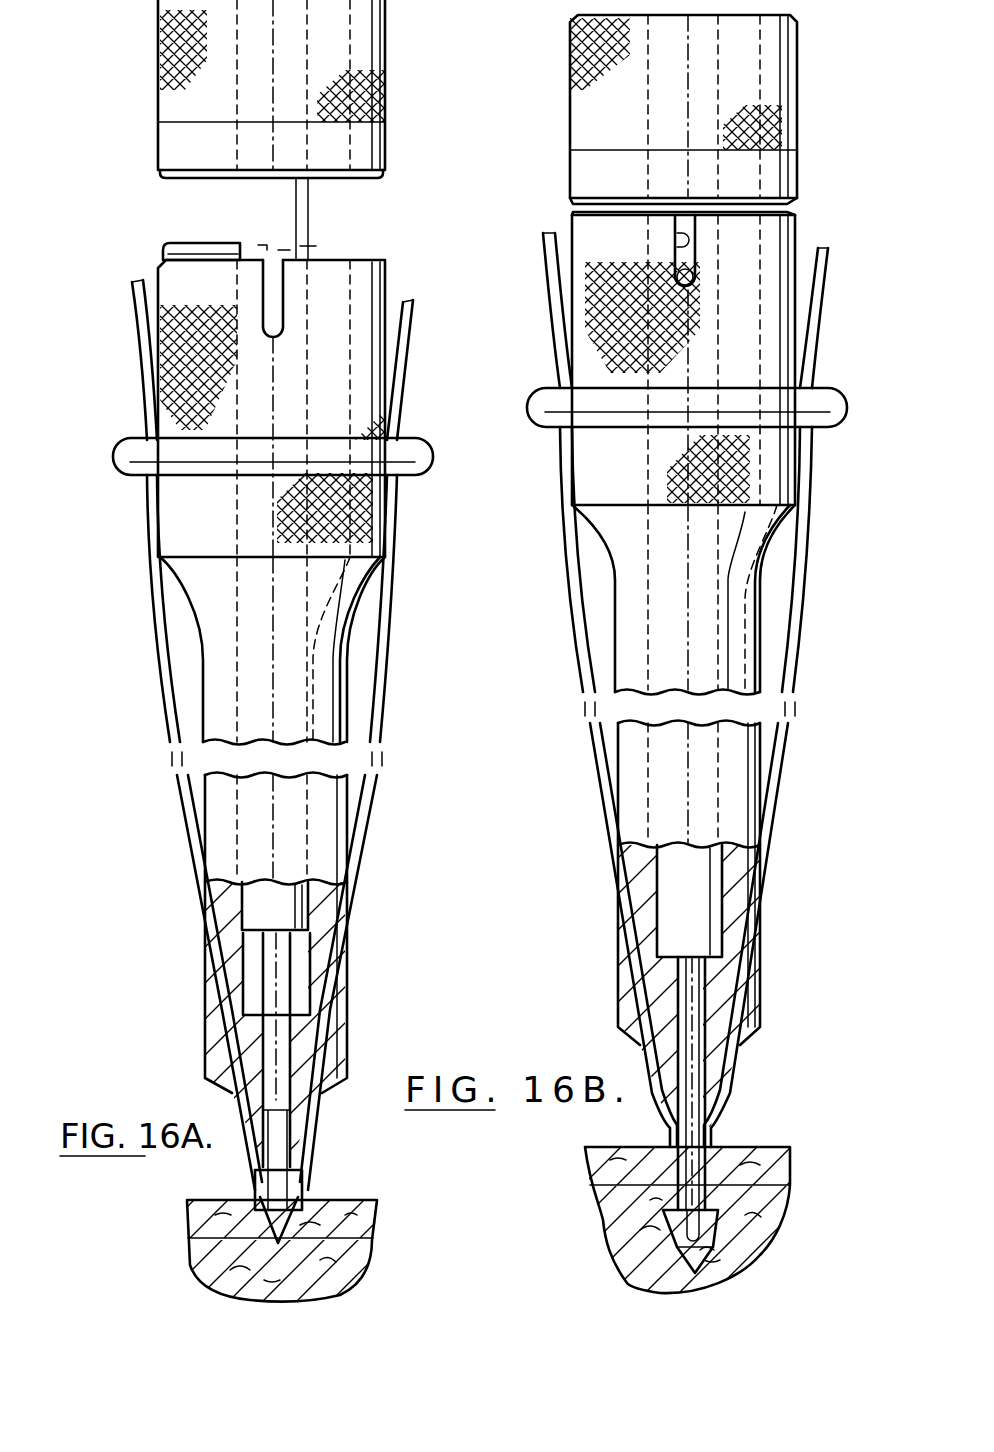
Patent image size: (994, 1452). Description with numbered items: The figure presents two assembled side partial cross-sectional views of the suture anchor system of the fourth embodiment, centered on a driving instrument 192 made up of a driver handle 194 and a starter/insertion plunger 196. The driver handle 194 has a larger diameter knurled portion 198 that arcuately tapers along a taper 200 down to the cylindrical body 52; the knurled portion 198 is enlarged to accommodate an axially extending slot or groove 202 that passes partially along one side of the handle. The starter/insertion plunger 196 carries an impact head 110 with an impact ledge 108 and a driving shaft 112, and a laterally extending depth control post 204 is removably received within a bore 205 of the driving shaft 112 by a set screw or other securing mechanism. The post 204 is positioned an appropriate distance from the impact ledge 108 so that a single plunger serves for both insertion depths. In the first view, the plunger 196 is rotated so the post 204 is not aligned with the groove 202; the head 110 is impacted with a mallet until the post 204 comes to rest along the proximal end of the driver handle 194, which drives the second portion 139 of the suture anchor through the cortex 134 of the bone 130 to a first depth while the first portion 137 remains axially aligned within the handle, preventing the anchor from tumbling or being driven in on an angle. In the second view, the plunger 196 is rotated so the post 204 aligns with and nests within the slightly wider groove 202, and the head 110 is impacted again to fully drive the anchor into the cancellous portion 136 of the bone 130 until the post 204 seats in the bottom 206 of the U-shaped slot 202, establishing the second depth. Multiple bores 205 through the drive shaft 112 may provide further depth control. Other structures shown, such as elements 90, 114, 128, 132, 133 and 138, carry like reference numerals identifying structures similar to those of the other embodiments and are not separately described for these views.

In FIG. 16A, the cylindrical body 52 is at (347, 802).
In FIG. 16B, the cylindrical body 52 is at (762, 758).
In FIG. 16A, the knurled gripping surface 90 is at (172, 43).
In FIG. 16B, the knurled gripping surface 90 is at (777, 127).
In FIG. 16A, the impact ledge 108 is at (178, 182).
In FIG. 16A, the impact head 110 is at (362, 21).
In FIG. 16B, the impact head 110 is at (768, 37).
In FIG. 16A, the driving shaft 112 is at (296, 192).
In FIG. 16B, the driving shaft 112 is at (705, 575).
In FIG. 16A, the needle rod 114 is at (290, 967).
In FIG. 16B, the needle rod 114 is at (693, 993).
In FIG. 16A, the annular ring 128 is at (417, 450).
In FIG. 16B, the annular ring 128 is at (830, 400).
In FIG. 16A, the bone 130 is at (187, 1207).
In FIG. 16B, the bone 130 is at (597, 1147).
In FIG. 16A, the wires 132 is at (385, 642).
In FIG. 16B, the wires 132 is at (793, 633).
In FIG. 16A, the wire ends 133 is at (410, 312).
In FIG. 16B, the wire ends 133 is at (817, 270).
In FIG. 16A, the cortex 134 is at (193, 1222).
In FIG. 16B, the cortex 134 is at (790, 1163).
In FIG. 16A, the cancellous portion 136 is at (203, 1258).
In FIG. 16B, the cancellous portion 136 is at (767, 1247).
In FIG. 16A, the first portion 137 is at (293, 1207).
In FIG. 16B, the distal tip 138 is at (713, 1140).
In FIG. 16A, the second portion 139 is at (308, 1203).
In FIG. 16A, the driving instrument 192 is at (100, 338).
In FIG. 16A, the driver handle 194 is at (367, 282).
In FIG. 16A, the starter/insertion plunger 196 is at (362, 150).
In FIG. 16A, the knurled portion 198 is at (347, 530).
In FIG. 16A, the taper 200 is at (362, 580).
In FIG. 16A, the slot or groove 202 is at (278, 290).
In FIG. 16B, the slot or groove 202 is at (677, 233).
In FIG. 16A, the depth control post 204 is at (177, 248).
In FIG. 16B, the depth control post 204 is at (700, 290).
In FIG. 16A, the bore 205 is at (308, 248).
In FIG. 16B, the bottom of the U-shaped slot 206 is at (692, 277).